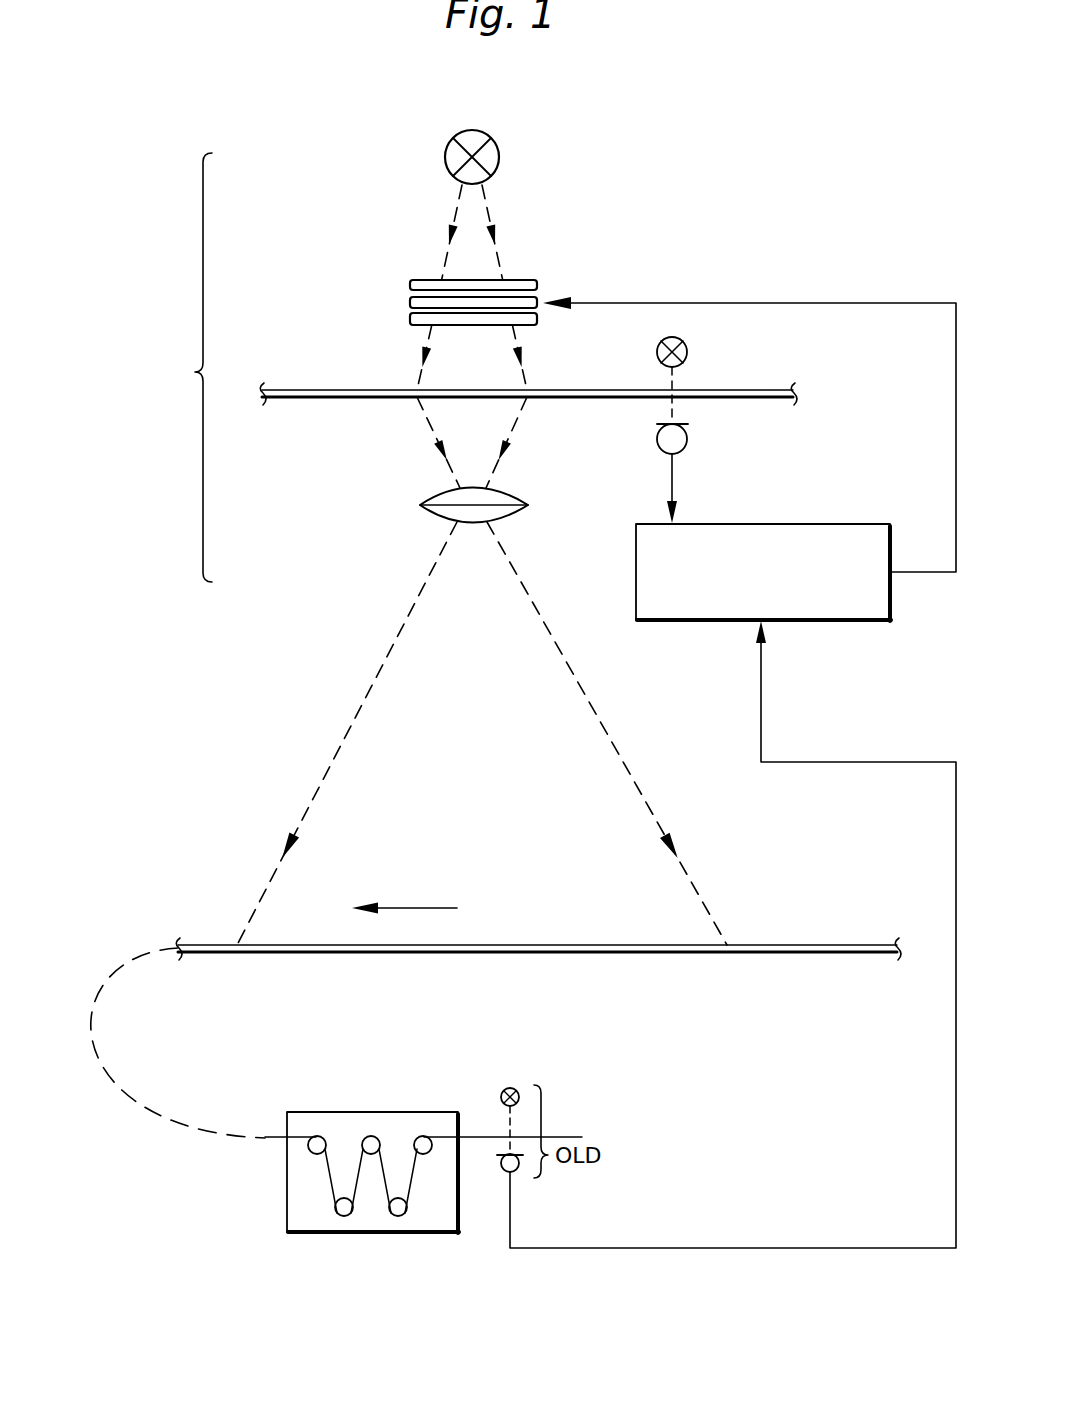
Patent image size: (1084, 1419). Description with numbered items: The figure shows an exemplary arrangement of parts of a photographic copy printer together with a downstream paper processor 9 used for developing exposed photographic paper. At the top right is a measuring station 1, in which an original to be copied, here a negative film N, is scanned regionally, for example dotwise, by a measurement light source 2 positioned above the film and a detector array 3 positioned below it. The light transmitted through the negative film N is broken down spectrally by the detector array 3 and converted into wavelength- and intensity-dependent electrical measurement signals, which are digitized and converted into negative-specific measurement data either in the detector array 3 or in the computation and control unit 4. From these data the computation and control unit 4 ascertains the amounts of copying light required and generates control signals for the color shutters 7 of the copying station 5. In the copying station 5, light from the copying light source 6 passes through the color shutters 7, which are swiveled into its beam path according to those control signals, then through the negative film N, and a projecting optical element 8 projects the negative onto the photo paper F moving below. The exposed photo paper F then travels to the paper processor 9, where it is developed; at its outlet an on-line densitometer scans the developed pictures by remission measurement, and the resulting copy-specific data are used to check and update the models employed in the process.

The measuring station 1 is at (664, 395).
The measurement light source 2 is at (656, 351).
The detector array 3 is at (657, 439).
The computation and control unit 4 is at (640, 572).
The copying station 5 is at (194, 367).
The copying light source 6 is at (487, 157).
The color shutters 7 is at (396, 275).
The projecting optical element 8 is at (440, 519).
The paper processor 9 is at (316, 1120).
The photo paper F is at (537, 945).
The negative film N is at (440, 390).